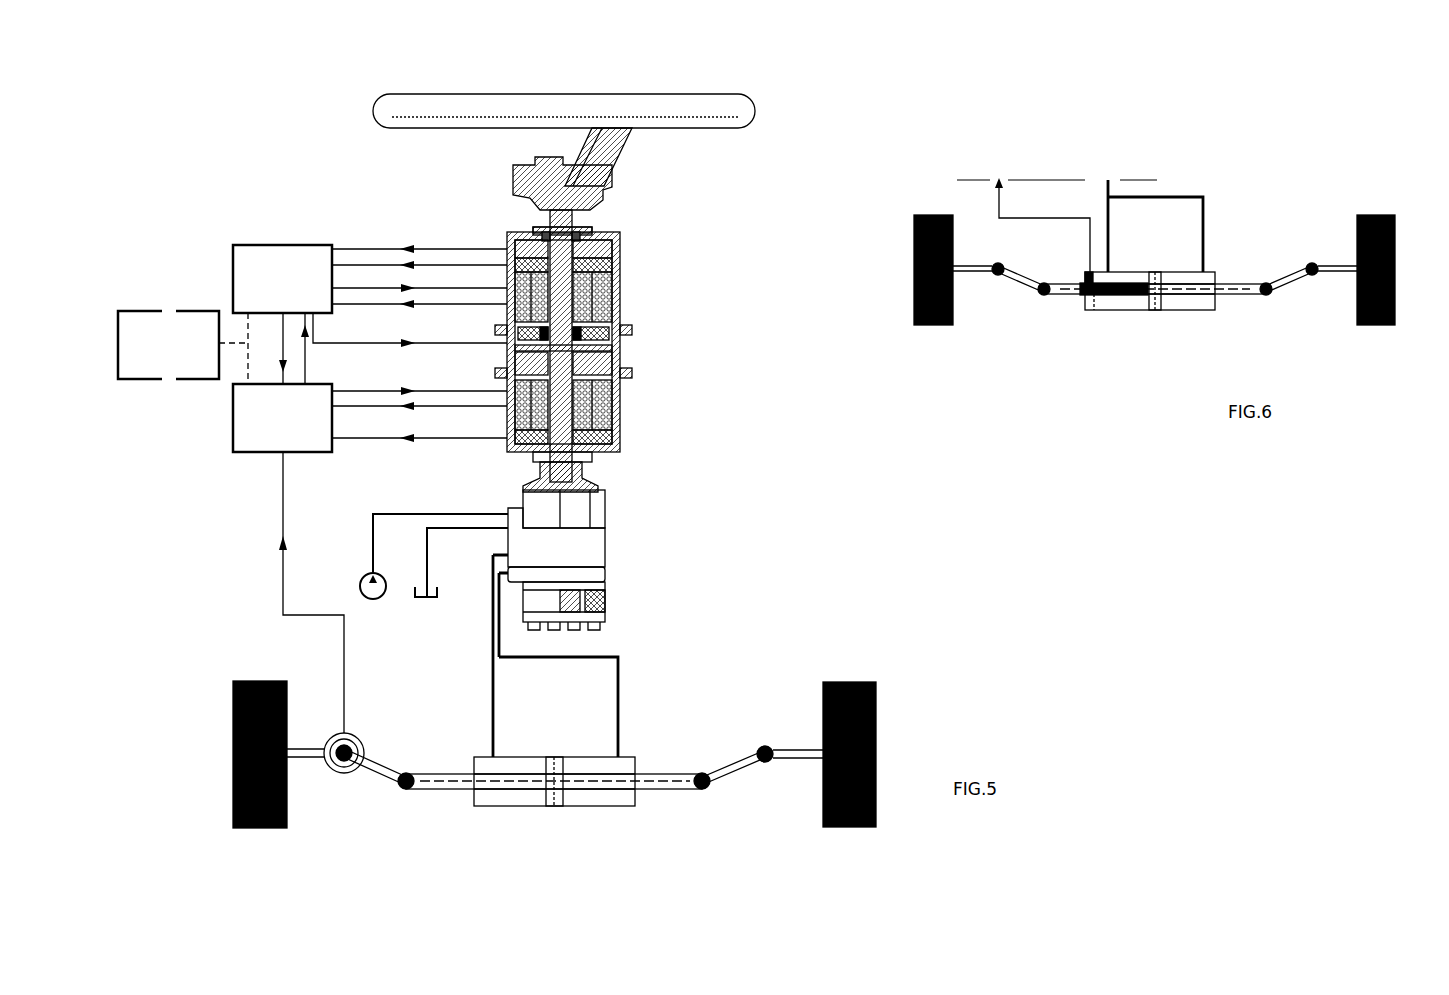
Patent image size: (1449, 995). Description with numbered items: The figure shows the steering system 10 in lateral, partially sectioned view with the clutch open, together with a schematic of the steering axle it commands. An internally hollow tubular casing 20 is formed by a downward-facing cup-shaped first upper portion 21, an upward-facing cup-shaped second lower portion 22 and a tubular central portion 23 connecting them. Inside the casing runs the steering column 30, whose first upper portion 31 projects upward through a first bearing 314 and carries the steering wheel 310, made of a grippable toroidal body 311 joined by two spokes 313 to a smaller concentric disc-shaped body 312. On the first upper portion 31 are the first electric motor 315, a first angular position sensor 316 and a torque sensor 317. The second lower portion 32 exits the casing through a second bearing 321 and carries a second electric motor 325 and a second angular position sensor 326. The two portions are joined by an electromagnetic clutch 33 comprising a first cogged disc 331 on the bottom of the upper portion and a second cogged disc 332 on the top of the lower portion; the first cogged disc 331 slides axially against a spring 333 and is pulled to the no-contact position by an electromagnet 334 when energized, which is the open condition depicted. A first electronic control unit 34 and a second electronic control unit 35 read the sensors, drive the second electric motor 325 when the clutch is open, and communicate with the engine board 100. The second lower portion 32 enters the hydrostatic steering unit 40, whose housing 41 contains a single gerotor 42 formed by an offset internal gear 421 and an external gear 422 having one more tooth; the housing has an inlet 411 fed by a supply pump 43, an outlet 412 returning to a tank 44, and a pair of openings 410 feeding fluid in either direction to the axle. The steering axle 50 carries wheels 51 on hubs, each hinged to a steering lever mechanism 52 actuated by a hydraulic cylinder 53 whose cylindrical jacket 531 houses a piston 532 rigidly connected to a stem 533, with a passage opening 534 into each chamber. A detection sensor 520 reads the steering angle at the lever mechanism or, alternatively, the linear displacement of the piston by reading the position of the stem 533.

In FIG. 5, the steering system 10 is at (226, 183).
In FIG. 5, the board of the engine 100 is at (132, 311).
In FIG. 5, the first electronic control unit 34 is at (280, 258).
In FIG. 5, the second electronic control unit 35 is at (262, 435).
In FIG. 5, the steering wheel 310 is at (372, 105).
In FIG. 5, the toroidal body 311 is at (708, 112).
In FIG. 5, the spokes 313 is at (622, 150).
In FIG. 5, the annular or disc-shaped body 312 is at (612, 181).
In FIG. 5, the tubular casing 20 is at (512, 234).
In FIG. 5, the first angular position sensor 316 is at (540, 228).
In FIG. 5, the first bearing 314 is at (600, 232).
In FIG. 5, the first upper portion 31 is at (620, 250).
In FIG. 5, the torque sensor 317 is at (620, 266).
In FIG. 5, the first upper portion 21 is at (620, 284).
In FIG. 5, the first electric motor 315 is at (620, 302).
In FIG. 5, the electromagnet 334 is at (632, 324).
In FIG. 5, the spring 333 is at (620, 340).
In FIG. 5, the clutch 33 is at (516, 349).
In FIG. 5, the first cogged disc 331 is at (620, 355).
In FIG. 5, the central portion 23 is at (632, 372).
In FIG. 5, the second cogged disc 332 is at (622, 380).
In FIG. 5, the second electric motor 325 is at (620, 434).
In FIG. 5, the second angular position sensor 326 is at (620, 448).
In FIG. 5, the second lower portion 32 is at (592, 462).
In FIG. 5, the second bearing 321 is at (582, 478).
In FIG. 5, the second lower portion 22 is at (533, 452).
In FIG. 5, the steering column 30 is at (576, 222).
In FIG. 5, the hydrostatic steering unit 40 is at (606, 547).
In FIG. 5, the housing 41 is at (608, 505).
In FIG. 5, the gerotor 42 is at (606, 598).
In FIG. 5, the external gear 422 is at (606, 605).
In FIG. 5, the internal gear 421 is at (600, 626).
In FIG. 5, the inlet 411 is at (508, 516).
In FIG. 5, the outlet 412 is at (508, 509).
In FIG. 5, the openings 410 is at (508, 548).
In FIG. 5, the supply pump 43 is at (360, 586).
In FIG. 5, the tank 44 is at (415, 600).
In FIG. 5, the steering axle 50 is at (663, 799).
In FIG. 6, the steering axle 50 is at (1238, 302).
In FIG. 5, the wheels 51 is at (260, 681).
In FIG. 6, the wheels 51 is at (1377, 215).
In FIG. 5, the detection sensor 520 is at (338, 775).
In FIG. 6, the detection sensor 520 is at (1086, 297).
In FIG. 5, the steering lever mechanism 52 is at (380, 770).
In FIG. 6, the steering lever mechanism 52 is at (1020, 280).
In FIG. 5, the hydraulic cylinder 53 is at (638, 760).
In FIG. 6, the hydraulic cylinder 53 is at (1216, 272).
In FIG. 5, the stem 533 is at (405, 790).
In FIG. 6, the stem 533 is at (1075, 295).
In FIG. 5, the cylindrical jacket 531 is at (515, 808).
In FIG. 6, the cylindrical jacket 531 is at (1125, 312).
In FIG. 5, the piston 532 is at (556, 808).
In FIG. 6, the piston 532 is at (1161, 300).
In FIG. 5, the passage opening 534 is at (490, 755).
In FIG. 6, the passage opening 534 is at (1105, 265).